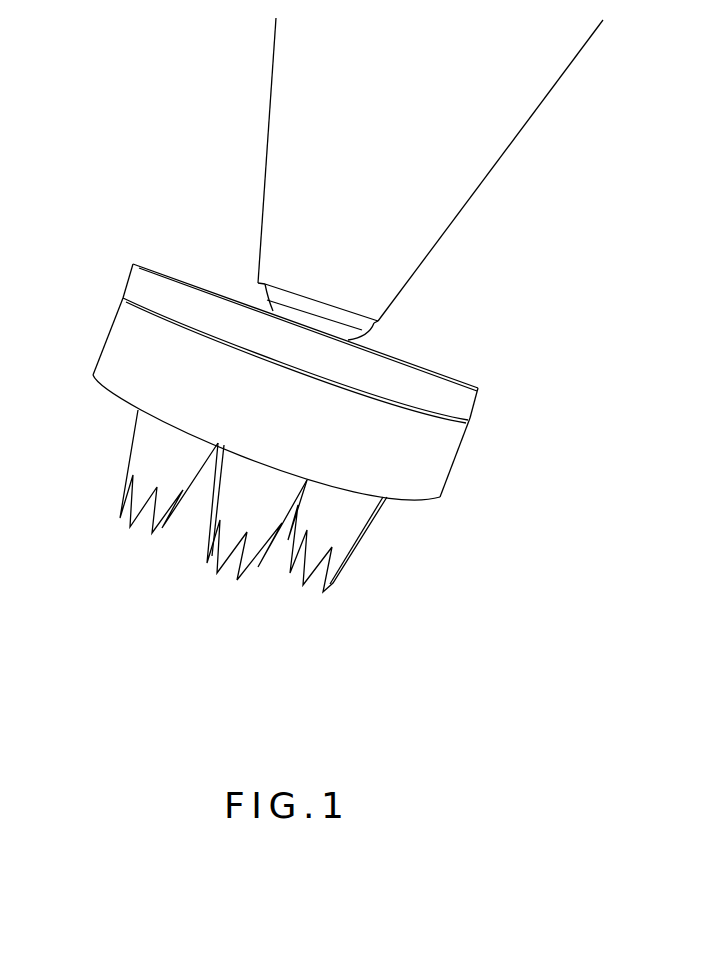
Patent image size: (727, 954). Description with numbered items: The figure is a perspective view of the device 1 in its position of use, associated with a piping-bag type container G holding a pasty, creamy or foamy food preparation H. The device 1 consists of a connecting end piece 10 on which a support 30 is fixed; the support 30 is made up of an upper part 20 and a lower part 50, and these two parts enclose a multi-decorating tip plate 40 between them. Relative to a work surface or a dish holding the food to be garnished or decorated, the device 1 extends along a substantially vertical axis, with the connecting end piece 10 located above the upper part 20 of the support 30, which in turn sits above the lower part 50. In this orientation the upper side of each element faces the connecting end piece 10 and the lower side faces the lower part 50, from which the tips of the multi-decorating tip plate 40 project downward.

The device 1 is at (70, 293).
The food preparation H is at (375, 197).
The container G is at (547, 135).
The connecting end piece 10 is at (372, 337).
The upper part 20 is at (480, 405).
The support 30 is at (369, 383).
The multi-decorating tip plate 40 is at (383, 541).
The lower part 50 is at (574, 380).